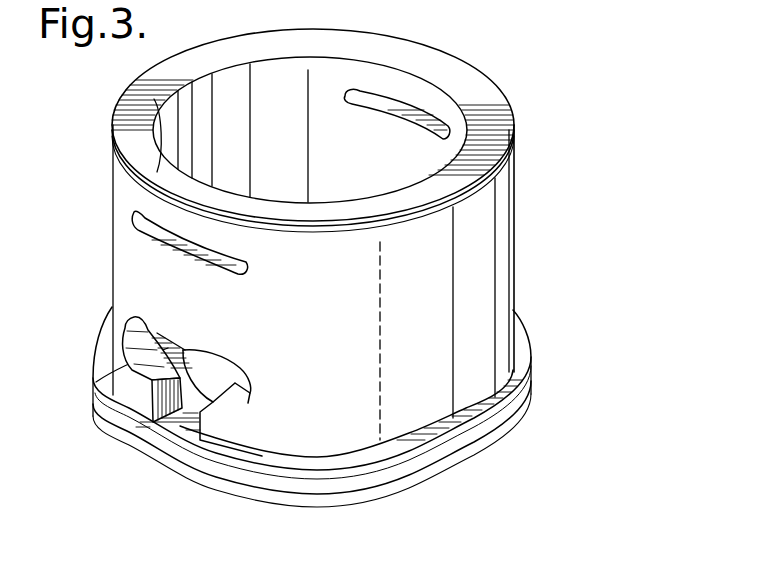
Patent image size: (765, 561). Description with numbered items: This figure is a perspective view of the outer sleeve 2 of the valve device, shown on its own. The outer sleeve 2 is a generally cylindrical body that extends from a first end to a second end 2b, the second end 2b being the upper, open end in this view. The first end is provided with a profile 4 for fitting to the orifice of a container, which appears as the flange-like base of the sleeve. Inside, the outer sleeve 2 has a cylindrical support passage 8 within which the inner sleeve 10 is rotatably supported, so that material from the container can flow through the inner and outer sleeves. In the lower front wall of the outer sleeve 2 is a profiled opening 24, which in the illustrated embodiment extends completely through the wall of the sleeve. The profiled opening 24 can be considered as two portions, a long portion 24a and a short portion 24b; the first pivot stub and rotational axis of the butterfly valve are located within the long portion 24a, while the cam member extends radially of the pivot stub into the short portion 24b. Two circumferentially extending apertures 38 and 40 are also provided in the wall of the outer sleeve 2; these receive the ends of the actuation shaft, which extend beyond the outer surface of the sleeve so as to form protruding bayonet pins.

The outer sleeve 2 is at (478, 272).
The second end 2b is at (513, 119).
The profile 4 is at (517, 425).
The cylindrical support passage 8 is at (450, 185).
The inner sleeve 10 is at (453, 112).
The profiled opening 24 is at (177, 439).
The long portion 24a is at (94, 380).
The short portion 24b is at (176, 412).
The circumferentially extending aperture 38 is at (140, 237).
The circumferentially extending aperture 40 is at (398, 102).